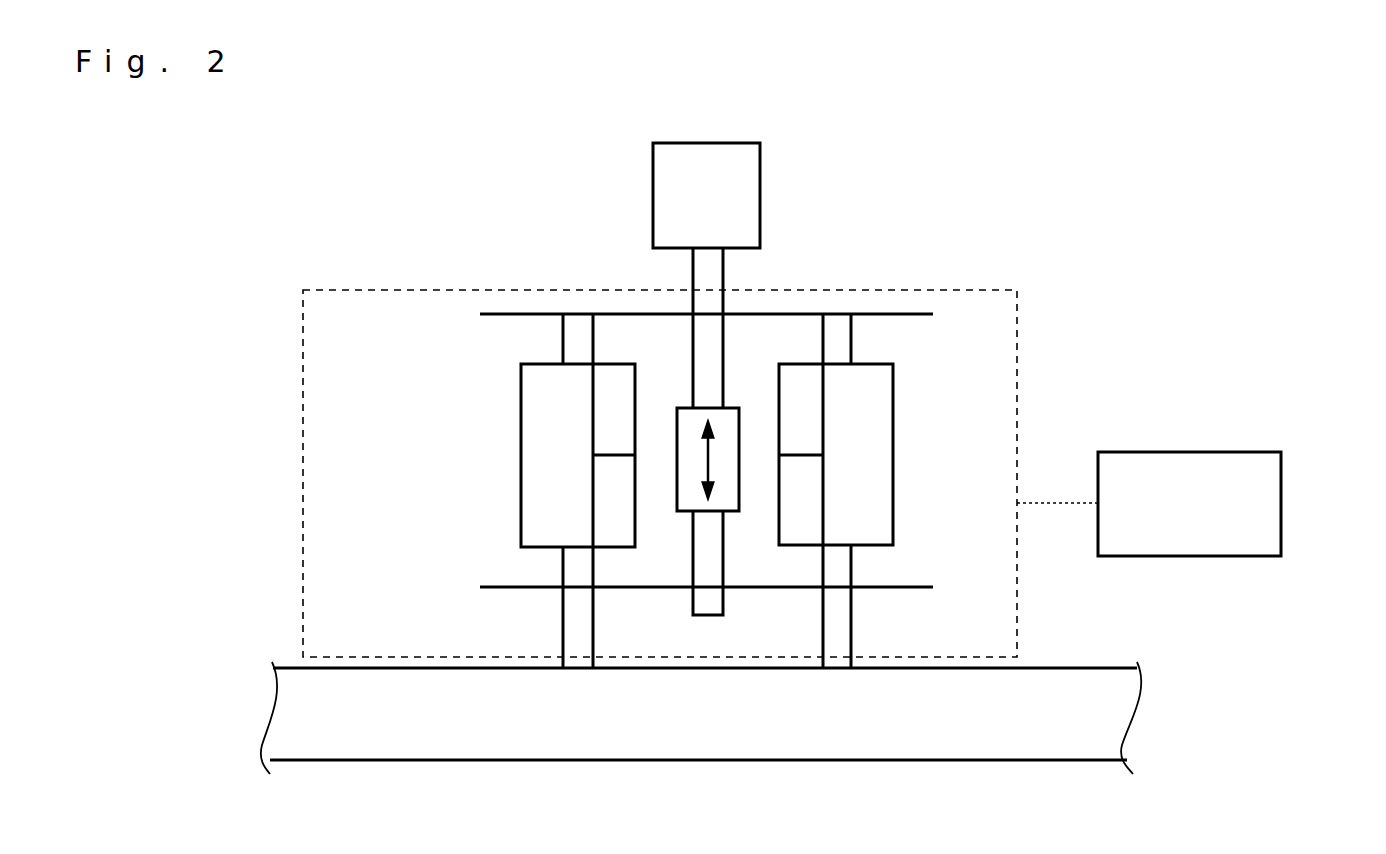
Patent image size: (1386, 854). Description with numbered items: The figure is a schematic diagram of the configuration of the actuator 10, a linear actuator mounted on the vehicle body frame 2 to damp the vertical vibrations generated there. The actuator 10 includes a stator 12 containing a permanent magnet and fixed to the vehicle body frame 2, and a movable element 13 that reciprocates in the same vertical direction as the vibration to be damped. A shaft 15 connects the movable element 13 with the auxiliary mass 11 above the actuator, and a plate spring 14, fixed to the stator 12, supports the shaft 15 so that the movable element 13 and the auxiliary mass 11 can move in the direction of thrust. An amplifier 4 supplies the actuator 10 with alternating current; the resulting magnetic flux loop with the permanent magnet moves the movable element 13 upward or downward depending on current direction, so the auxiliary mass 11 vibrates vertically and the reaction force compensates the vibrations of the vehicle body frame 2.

The vehicle body frame 2 is at (1056, 668).
The amplifier 4 is at (1282, 522).
The actuator 10 is at (322, 582).
The auxiliary mass 11 is at (760, 188).
The stator 12 is at (520, 455).
The movable element 13 is at (739, 470).
The plate spring 14 is at (888, 316).
The shaft 15 is at (710, 345).